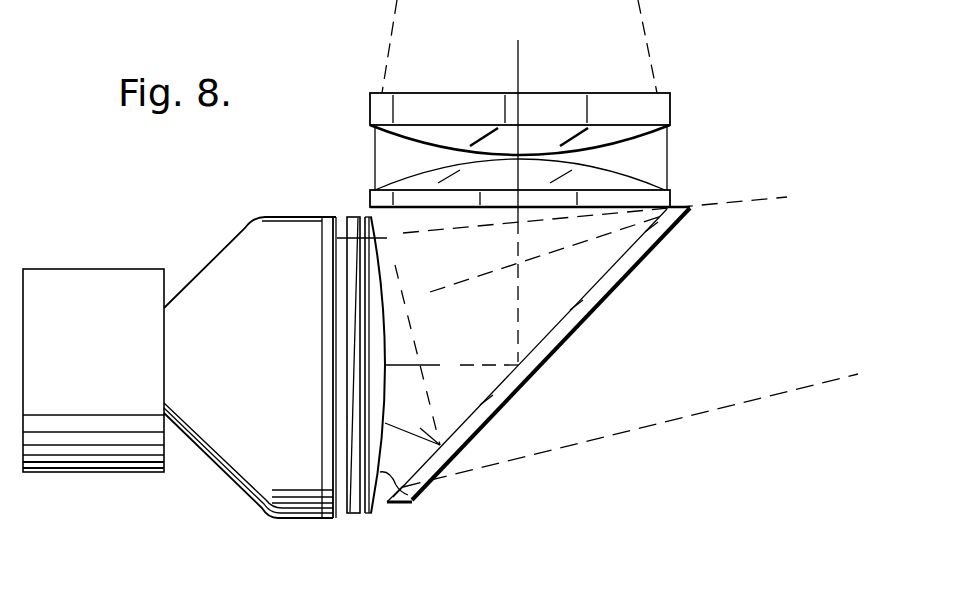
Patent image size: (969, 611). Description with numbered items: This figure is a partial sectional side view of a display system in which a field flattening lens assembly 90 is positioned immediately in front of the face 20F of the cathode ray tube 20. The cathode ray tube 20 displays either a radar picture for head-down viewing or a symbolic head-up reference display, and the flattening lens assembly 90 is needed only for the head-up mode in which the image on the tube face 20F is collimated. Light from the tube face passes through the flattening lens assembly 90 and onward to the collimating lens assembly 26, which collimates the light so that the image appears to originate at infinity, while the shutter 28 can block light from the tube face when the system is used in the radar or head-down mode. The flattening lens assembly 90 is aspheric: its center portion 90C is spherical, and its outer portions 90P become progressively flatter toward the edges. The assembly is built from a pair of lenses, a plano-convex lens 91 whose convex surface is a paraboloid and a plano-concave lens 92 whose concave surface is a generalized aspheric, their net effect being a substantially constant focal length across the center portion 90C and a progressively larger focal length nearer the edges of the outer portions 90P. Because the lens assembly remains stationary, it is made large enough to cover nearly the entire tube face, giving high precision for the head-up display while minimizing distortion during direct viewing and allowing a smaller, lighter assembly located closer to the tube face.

The cathode ray tube 20 is at (207, 245).
The face of the cathode ray tube 20F is at (337, 216).
The collimating lens assembly 26 is at (650, 185).
The shutter 28 is at (667, 125).
The field flattening lens assembly 90 is at (363, 203).
The center portion of the field flattening lens assembly 90C is at (386, 340).
The outer portions of the field flattening lens assembly 90P is at (410, 497).
The plano-convex lens 91 is at (377, 515).
The plano-concave lens 92 is at (353, 515).